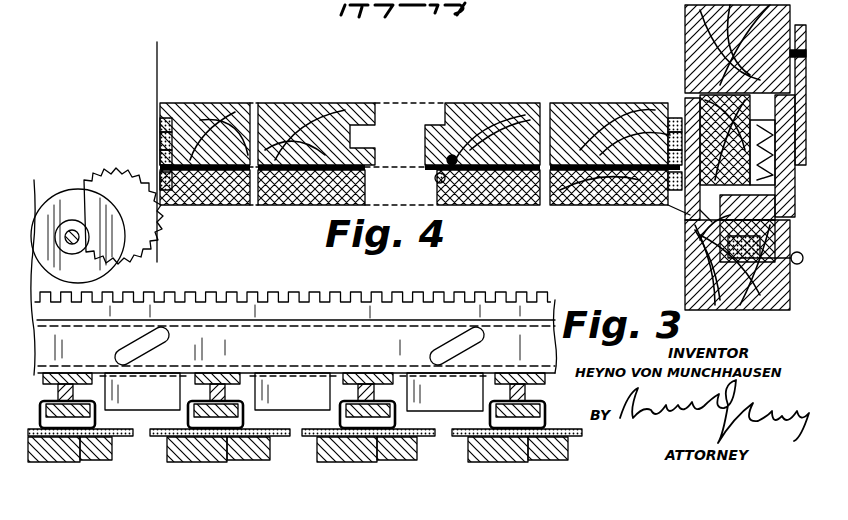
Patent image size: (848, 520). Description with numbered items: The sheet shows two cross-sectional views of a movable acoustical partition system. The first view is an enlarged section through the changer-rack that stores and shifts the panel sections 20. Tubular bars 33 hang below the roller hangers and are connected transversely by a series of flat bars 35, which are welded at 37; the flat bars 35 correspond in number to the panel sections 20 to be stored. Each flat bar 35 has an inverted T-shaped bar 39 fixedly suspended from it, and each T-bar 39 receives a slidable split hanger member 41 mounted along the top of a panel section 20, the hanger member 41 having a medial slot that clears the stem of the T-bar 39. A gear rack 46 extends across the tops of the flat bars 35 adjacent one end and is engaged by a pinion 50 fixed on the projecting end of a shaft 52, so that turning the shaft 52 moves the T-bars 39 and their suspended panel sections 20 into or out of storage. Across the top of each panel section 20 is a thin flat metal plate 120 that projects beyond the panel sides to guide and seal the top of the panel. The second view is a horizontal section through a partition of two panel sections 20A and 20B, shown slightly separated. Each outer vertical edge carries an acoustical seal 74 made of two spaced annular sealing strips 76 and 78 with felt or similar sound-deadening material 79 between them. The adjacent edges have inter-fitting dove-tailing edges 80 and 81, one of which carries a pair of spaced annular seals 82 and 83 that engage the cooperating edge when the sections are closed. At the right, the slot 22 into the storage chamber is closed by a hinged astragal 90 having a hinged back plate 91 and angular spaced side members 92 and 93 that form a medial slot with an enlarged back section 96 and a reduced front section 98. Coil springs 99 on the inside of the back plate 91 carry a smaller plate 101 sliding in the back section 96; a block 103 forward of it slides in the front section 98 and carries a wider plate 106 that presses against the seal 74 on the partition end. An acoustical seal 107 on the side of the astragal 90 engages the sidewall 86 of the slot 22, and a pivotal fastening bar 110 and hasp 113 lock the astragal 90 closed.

In FIG. 3, the panel section 20 is at (167, 449).
In FIG. 4, the panel section 20A is at (240, 125).
In FIG. 4, the panel section 20B is at (555, 117).
In FIG. 4, the slot 22 is at (784, 68).
In FIG. 3, the tubular bar 33 is at (296, 350).
In FIG. 3, the flat bar 35 is at (98, 352).
In FIG. 3, the weld 37 is at (188, 378).
In FIG. 3, the inverted T-shaped bar 39 is at (73, 392).
In FIG. 3, the split hanger member 41 is at (244, 414).
In FIG. 3, the gear rack 46 is at (177, 298).
In FIG. 3, the pinion 50 is at (113, 260).
In FIG. 3, the shaft 52 is at (75, 230).
In FIG. 4, the acoustical seal 74 is at (148, 137).
In FIG. 4, the sealing strip 76 is at (160, 123).
In FIG. 4, the sealing strip 78 is at (158, 180).
In FIG. 4, the sound-deadening material 79 is at (158, 152).
In FIG. 4, the dove-tailing edge 80 is at (380, 95).
In FIG. 4, the dove-tailing edge 81 is at (440, 105).
In FIG. 4, the annular seal 82 is at (446, 159).
In FIG. 4, the annular seal 83 is at (434, 179).
In FIG. 4, the sidewall 86 is at (783, 302).
In FIG. 4, the astragal 90 is at (794, 218).
In FIG. 4, the back plate 91 is at (792, 248).
In FIG. 4, the side member 92 is at (790, 200).
In FIG. 4, the side member 93 is at (770, 118).
In FIG. 4, the enlarged back section 96 is at (770, 132).
In FIG. 4, the reduced front section 98 is at (688, 104).
In FIG. 4, the coil spring 99 is at (785, 180).
In FIG. 4, the plate 101 is at (700, 240).
In FIG. 4, the block 103 is at (705, 220).
In FIG. 4, the wider plate 106 is at (685, 210).
In FIG. 4, the acoustical seal 107 is at (718, 302).
In FIG. 4, the pivotal fastening bar 110 is at (798, 84).
In FIG. 4, the hasp 113 is at (793, 35).
In FIG. 3, the metal plate 120 is at (154, 430).